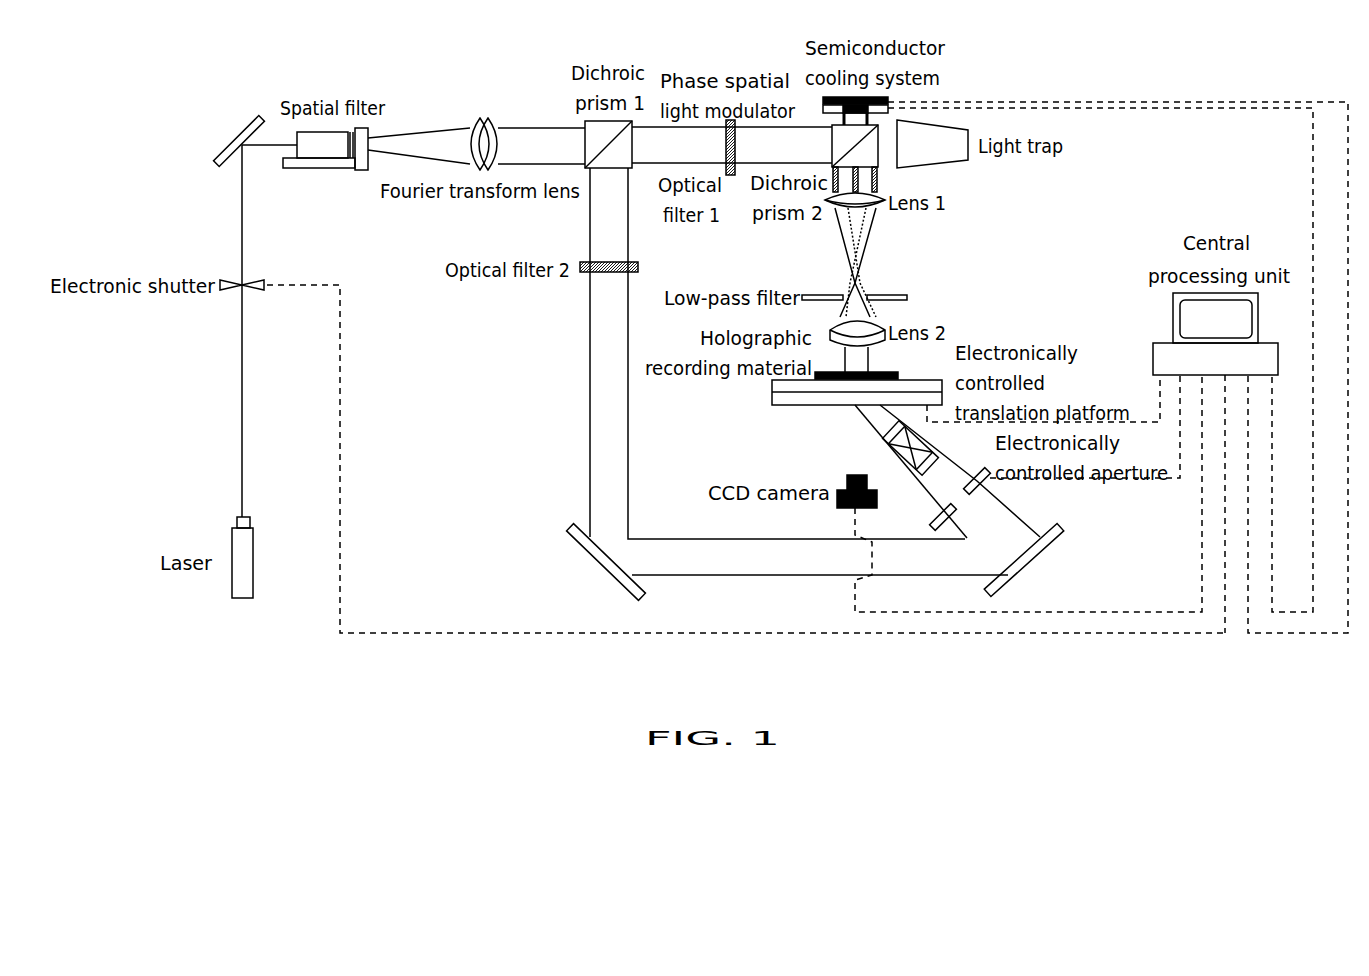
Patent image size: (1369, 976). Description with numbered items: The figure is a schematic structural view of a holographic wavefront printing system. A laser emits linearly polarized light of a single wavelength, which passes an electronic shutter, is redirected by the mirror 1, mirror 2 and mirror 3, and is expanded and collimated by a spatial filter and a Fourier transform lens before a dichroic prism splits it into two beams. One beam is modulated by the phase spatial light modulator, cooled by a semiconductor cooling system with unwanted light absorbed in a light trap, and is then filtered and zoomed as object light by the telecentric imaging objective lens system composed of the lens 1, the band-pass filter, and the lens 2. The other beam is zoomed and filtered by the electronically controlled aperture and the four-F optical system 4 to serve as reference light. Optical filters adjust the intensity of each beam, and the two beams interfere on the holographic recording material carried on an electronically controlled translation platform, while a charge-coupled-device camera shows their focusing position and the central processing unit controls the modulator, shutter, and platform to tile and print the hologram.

The lens 1 is at (206, 141).
The lens 2 is at (584, 562).
The Mirror 3 is at (1045, 559).
The 4F optical system 4 is at (819, 444).